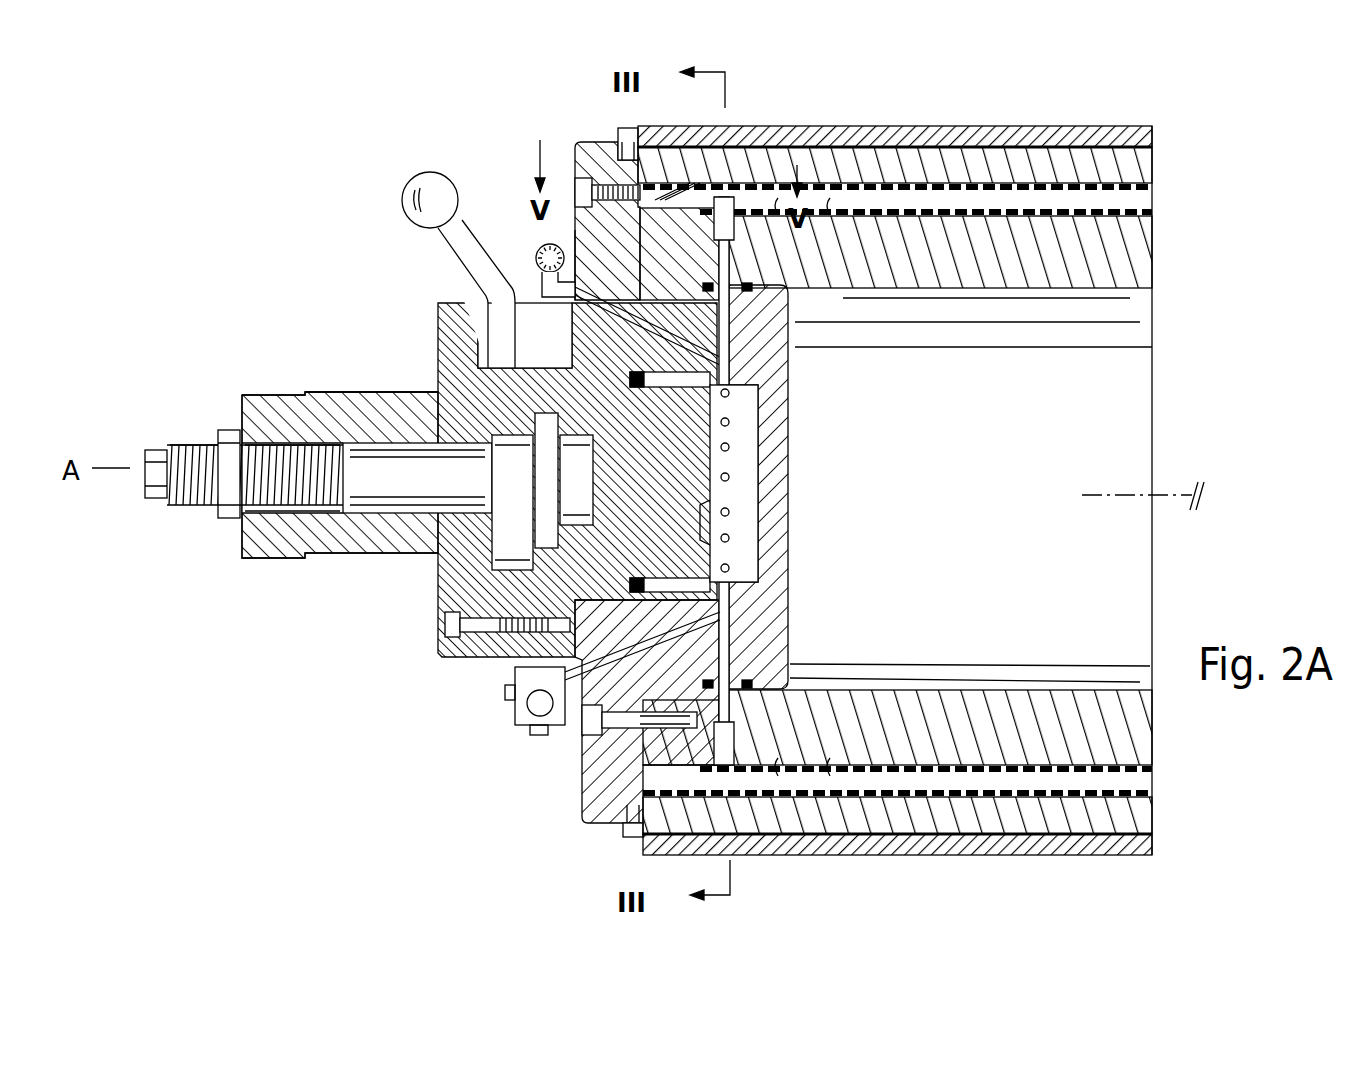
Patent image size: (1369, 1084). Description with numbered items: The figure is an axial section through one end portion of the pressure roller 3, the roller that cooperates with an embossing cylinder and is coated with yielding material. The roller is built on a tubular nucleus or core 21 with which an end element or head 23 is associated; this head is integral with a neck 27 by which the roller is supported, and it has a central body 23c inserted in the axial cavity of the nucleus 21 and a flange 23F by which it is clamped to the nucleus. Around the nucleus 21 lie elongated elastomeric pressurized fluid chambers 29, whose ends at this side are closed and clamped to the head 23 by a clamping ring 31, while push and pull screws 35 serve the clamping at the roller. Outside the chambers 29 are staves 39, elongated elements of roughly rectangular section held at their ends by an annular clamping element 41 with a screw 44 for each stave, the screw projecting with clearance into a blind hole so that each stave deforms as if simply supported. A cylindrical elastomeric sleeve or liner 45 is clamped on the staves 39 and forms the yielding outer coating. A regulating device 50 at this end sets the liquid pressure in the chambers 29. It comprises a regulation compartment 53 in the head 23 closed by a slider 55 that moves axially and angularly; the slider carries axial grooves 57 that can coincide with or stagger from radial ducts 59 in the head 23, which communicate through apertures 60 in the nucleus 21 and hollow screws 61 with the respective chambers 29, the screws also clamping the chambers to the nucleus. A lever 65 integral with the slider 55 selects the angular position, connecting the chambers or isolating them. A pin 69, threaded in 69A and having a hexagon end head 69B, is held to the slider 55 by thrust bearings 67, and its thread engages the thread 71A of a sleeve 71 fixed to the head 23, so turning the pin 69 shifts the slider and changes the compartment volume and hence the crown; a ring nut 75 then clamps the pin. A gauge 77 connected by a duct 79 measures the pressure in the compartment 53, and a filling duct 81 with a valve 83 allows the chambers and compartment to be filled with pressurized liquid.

The pressure roller 3 is at (372, 230).
The nucleus or core 21 is at (1130, 255).
The end element or head 23 is at (806, 495).
The central portion or body 23c is at (786, 334).
The flange 23F is at (572, 240).
The neck 27 is at (359, 383).
The pressurized fluid chambers 29 is at (985, 183).
The clamping ring 31 is at (660, 185).
The push and pull screws 35 is at (1030, 127).
The staves 39 is at (830, 170).
The annular clamping element 41 is at (618, 140).
The screw 44 is at (626, 128).
The cylindrical sleeve or liner 45 is at (935, 143).
The regulating device 50 is at (395, 597).
The regulation compartment 53 is at (740, 470).
The slider 55 is at (705, 520).
The axial grooves 57 is at (700, 395).
The radial ducts 59 is at (735, 385).
The ducts or through apertures 60 is at (728, 262).
The hollow screws 61 is at (724, 210).
The lever 65 is at (412, 183).
The thrust bearings 67 is at (542, 491).
The pin 69 is at (385, 500).
The thread 69A is at (192, 442).
The hexagon end head 69B is at (160, 500).
The sleeve 71 is at (386, 400).
The thread 71A is at (262, 448).
The ring nut 75 is at (225, 520).
The gauge 77 is at (535, 255).
The duct 79 is at (600, 326).
The filling duct 81 is at (580, 720).
The valve 83 is at (513, 705).